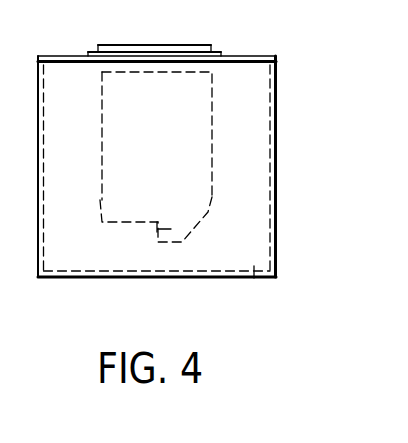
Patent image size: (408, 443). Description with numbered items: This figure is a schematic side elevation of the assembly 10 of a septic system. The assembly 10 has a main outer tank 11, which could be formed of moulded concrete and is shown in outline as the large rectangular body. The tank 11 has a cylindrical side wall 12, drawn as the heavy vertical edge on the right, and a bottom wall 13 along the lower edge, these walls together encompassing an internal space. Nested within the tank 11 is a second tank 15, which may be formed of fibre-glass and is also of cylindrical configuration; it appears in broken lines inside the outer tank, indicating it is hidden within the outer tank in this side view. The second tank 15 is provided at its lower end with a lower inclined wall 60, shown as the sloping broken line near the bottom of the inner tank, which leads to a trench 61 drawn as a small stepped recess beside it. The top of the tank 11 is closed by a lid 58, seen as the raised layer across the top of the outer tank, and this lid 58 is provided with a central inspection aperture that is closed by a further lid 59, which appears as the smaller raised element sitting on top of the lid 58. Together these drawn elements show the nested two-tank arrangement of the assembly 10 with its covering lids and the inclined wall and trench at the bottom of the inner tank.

The assembly 10 is at (283, 148).
The main outer tank 11 is at (281, 274).
The cylindrical side wall 12 is at (283, 225).
The bottom wall 13 is at (253, 284).
The second tank 15 is at (100, 200).
The lid 58 is at (256, 56).
The further lid 59 is at (181, 44).
The lower inclined wall 60 is at (208, 212).
The trench 61 is at (157, 230).